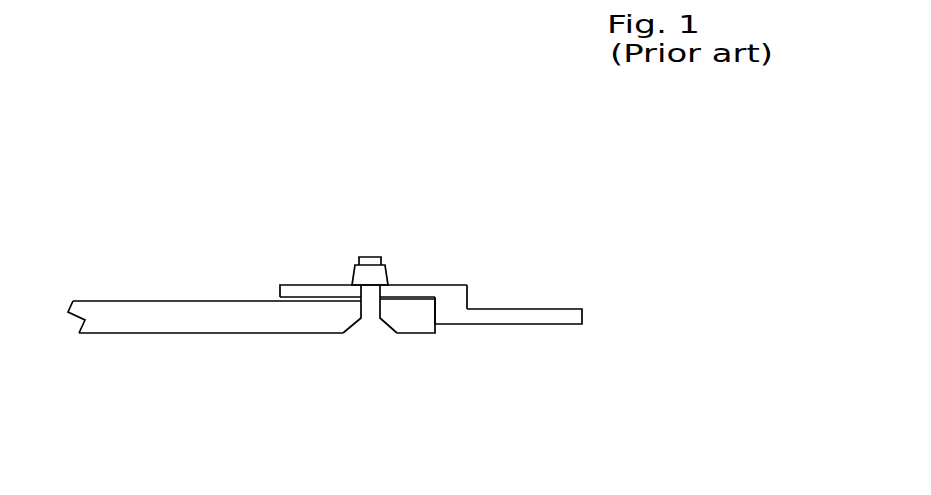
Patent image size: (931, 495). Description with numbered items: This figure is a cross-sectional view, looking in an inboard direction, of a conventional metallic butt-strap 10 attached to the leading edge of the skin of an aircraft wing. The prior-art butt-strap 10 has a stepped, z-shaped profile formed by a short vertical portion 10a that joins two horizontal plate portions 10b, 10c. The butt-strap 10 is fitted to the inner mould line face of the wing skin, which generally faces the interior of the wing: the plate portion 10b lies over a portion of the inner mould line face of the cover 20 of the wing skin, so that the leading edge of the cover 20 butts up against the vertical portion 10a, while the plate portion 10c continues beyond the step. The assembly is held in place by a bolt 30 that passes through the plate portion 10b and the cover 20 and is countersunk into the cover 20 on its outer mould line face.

The butt-strap 10 is at (519, 258).
The vertical portion 10a is at (452, 300).
The plate portion 10b is at (433, 289).
The plate portion 10c is at (518, 315).
The cover 20 is at (220, 323).
The bolt 30 is at (376, 322).